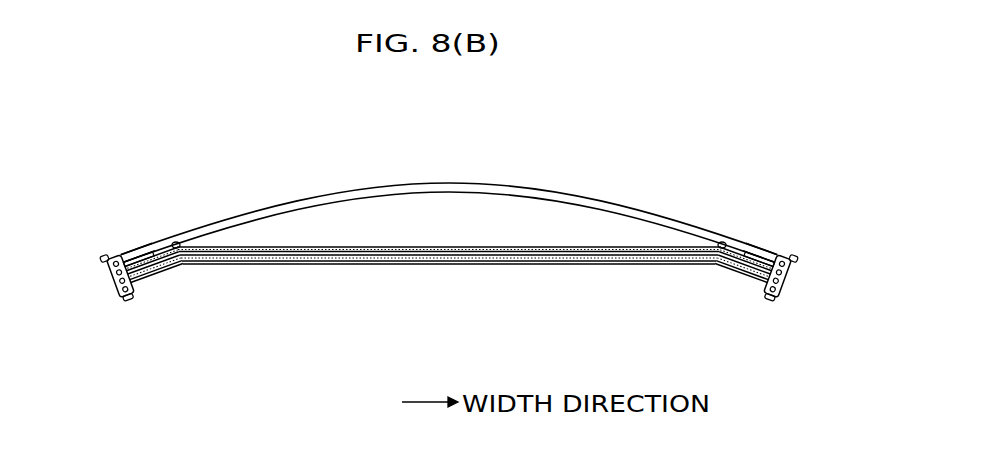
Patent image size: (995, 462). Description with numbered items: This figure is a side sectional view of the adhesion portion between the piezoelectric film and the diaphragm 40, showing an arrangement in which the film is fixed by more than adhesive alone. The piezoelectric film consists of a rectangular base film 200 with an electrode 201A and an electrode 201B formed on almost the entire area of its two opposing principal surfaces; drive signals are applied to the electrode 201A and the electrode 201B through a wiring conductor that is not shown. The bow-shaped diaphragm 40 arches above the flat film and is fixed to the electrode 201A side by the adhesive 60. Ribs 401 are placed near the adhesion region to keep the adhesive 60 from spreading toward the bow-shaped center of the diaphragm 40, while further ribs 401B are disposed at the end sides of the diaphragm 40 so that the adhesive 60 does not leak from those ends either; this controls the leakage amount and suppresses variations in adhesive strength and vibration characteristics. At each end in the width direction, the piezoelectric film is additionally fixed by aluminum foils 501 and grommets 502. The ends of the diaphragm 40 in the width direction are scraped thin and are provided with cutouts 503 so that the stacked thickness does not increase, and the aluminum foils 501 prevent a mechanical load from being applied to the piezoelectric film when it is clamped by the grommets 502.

The diaphragm 40 is at (551, 190).
The ribs 401 is at (178, 242).
The ribs 401B is at (140, 255).
The adhesive 60 is at (148, 252).
The base film 200 is at (449, 287).
The electrode 201A is at (290, 250).
The electrode 201B is at (140, 277).
The aluminum foils 501 is at (113, 283).
The grommets 502 is at (127, 294).
The cutouts 503 is at (110, 267).